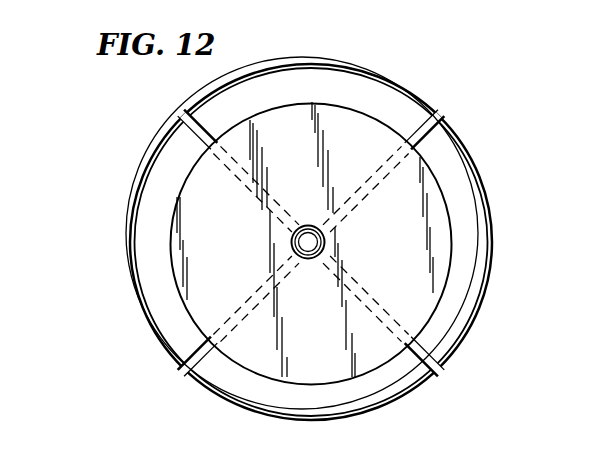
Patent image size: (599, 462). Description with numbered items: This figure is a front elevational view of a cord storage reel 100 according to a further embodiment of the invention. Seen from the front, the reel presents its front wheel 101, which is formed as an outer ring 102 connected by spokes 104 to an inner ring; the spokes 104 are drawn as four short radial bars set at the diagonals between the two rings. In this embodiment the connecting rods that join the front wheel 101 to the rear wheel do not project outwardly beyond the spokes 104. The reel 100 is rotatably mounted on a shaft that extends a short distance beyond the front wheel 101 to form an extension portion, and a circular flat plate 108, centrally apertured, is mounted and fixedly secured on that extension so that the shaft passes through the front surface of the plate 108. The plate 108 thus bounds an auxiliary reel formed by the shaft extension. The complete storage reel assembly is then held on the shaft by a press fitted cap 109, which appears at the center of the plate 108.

The cord storage reel 100 is at (430, 80).
The front wheel 101 is at (477, 160).
The outer ring 102 is at (415, 398).
The spokes 104 is at (193, 133).
The circular flat plate 108 is at (183, 267).
The press fitted cap 109 is at (300, 236).